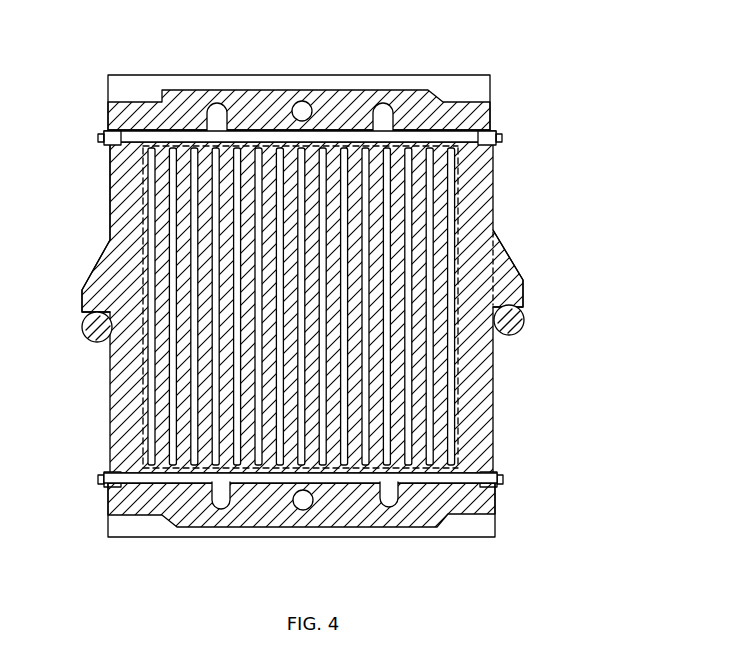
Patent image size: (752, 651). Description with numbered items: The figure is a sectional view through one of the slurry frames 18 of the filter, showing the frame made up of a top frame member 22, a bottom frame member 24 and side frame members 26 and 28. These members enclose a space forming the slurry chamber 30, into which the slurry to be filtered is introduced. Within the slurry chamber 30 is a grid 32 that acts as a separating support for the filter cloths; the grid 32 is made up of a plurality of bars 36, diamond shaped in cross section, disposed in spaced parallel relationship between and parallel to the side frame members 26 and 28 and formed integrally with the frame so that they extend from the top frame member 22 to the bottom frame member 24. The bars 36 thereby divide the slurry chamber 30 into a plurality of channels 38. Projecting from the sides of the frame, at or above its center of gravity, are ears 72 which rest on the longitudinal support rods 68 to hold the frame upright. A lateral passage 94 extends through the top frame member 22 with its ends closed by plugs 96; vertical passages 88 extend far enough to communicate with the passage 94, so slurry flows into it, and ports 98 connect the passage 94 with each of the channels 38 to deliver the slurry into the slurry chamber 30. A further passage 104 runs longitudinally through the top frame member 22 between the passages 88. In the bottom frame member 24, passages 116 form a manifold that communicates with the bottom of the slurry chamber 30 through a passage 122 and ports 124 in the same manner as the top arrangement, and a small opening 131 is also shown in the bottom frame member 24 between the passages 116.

The slurry frame 18 is at (363, 82).
The top frame member 22 is at (283, 80).
The bottom frame member 24 is at (353, 523).
The side frame member 26 is at (493, 192).
The side frame member 28 is at (108, 200).
The slurry chamber 30 is at (450, 187).
The grid 32 is at (447, 233).
The bar 36 is at (425, 418).
The channel 38 is at (412, 390).
The support rod 68 is at (82, 333).
The ear 72 is at (88, 278).
The passage 88 is at (214, 112).
The passage 94 is at (162, 140).
The plug 96 is at (102, 132).
The port 98 is at (410, 146).
The passage 104 is at (305, 108).
The passage 116 is at (222, 500).
The passage 122 is at (260, 478).
The port 124 is at (192, 473).
The aperture 131 is at (303, 503).